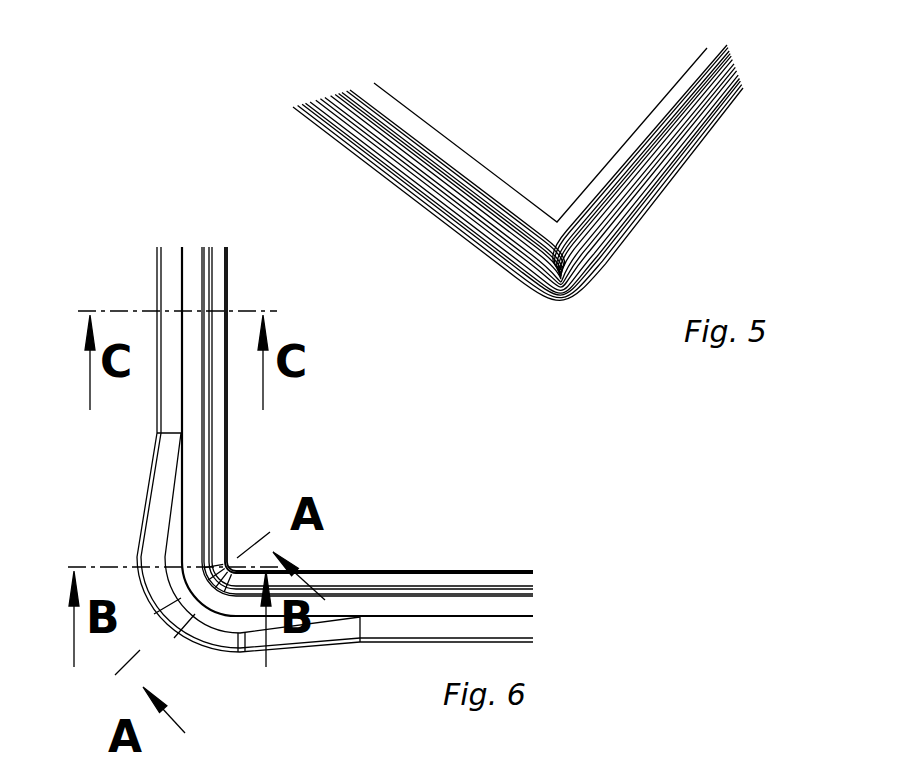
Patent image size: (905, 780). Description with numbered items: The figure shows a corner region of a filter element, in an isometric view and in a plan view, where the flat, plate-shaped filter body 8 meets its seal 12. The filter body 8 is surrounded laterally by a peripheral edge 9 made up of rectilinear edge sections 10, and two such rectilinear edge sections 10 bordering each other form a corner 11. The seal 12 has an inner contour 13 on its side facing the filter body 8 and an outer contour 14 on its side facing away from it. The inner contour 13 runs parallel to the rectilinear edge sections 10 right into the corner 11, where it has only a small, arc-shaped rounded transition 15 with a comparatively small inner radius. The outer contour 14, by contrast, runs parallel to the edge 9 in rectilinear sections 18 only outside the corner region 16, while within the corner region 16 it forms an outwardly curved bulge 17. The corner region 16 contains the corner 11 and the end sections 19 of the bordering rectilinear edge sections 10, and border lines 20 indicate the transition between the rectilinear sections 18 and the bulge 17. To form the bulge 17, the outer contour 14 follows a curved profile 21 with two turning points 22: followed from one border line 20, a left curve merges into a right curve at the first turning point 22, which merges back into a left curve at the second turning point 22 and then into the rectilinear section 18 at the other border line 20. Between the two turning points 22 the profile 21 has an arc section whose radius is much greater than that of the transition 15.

In FIG. 5, the filter body 8 is at (546, 123).
In FIG. 5, the edge 9 is at (650, 145).
In FIG. 6, the edge 9 is at (197, 474).
In FIG. 5, the rectilinear edge section 10 is at (438, 128).
In FIG. 6, the rectilinear edge section 10 is at (207, 290).
In FIG. 5, the corner 11 is at (557, 250).
In FIG. 6, the corner 11 is at (212, 600).
In FIG. 5, the seal 12 is at (438, 240).
In FIG. 6, the seal 12 is at (150, 258).
In FIG. 5, the inner contour 13 is at (615, 213).
In FIG. 6, the inner contour 13 is at (216, 409).
In FIG. 5, the outer contour 14 is at (627, 256).
In FIG. 6, the outer contour 14 is at (168, 374).
In FIG. 6, the rounded transition 15 is at (237, 556).
In FIG. 5, the corner region 16 is at (587, 307).
In FIG. 6, the corner region 16 is at (95, 492).
In FIG. 5, the bulge 17 is at (507, 297).
In FIG. 6, the bulge 17 is at (183, 657).
In FIG. 6, the rectilinear section of the outer contour 18 is at (157, 277).
In FIG. 6, the end section 19 is at (200, 530).
In FIG. 6, the border line 20 is at (152, 433).
In FIG. 6, the curved profile 21 is at (150, 603).
In FIG. 6, the turning point 22 is at (160, 556).